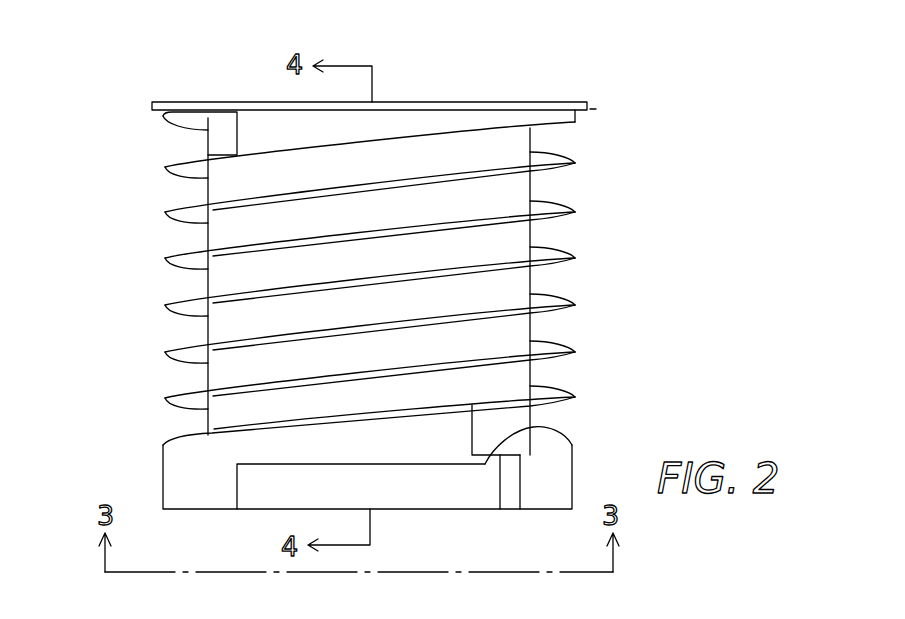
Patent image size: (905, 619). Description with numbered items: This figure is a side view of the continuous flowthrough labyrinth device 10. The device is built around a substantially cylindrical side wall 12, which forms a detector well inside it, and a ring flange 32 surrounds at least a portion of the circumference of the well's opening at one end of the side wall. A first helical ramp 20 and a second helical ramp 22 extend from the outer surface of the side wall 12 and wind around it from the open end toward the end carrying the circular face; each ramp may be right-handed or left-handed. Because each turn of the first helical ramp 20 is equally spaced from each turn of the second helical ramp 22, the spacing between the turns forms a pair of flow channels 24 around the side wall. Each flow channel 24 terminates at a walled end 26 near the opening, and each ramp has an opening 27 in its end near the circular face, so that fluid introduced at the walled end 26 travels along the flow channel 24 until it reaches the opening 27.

The continuous flowthrough labyrinth device 10 is at (612, 104).
The substantially cylindrical side wall 12 is at (208, 239).
The first helical ramp 20 is at (164, 168).
The second helical ramp 22 is at (163, 307).
The flow channels 24 is at (186, 190).
The walled end 26 is at (224, 131).
The opening 27 is at (533, 427).
The ring flange 32 is at (495, 102).